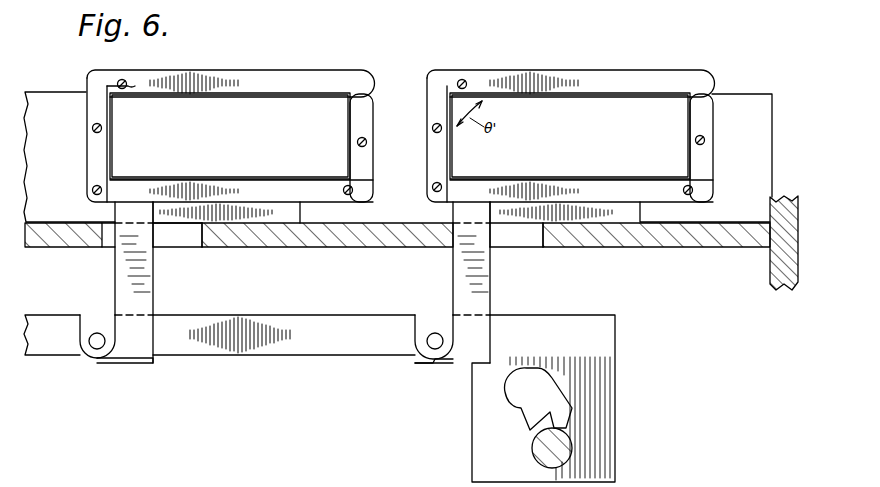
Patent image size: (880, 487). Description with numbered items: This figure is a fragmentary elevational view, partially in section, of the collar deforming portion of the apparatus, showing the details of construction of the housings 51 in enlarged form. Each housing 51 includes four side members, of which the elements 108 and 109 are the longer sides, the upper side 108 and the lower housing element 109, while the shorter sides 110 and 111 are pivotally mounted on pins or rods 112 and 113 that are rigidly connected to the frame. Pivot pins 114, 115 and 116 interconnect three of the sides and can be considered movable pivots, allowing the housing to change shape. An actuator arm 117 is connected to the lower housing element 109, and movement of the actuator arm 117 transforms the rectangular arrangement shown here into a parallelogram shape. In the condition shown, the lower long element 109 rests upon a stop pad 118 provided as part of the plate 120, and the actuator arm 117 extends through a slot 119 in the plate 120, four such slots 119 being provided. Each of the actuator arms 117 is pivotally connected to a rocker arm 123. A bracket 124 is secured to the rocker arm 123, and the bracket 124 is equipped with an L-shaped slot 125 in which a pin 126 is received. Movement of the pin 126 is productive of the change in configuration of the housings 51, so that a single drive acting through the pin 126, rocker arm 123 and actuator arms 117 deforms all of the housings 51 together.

The housing 51 is at (320, 75).
The side member 108 is at (250, 82).
The lower housing element 109 is at (248, 186).
The shorter side 110 is at (368, 110).
The shorter side 111 is at (103, 158).
The pin 112 is at (92, 129).
The pin 113 is at (368, 139).
The pivot pin 114 is at (355, 195).
The pivot pin 115 is at (90, 195).
The pivot pin 116 is at (127, 80).
The actuator arm 117 is at (148, 310).
The stop pad 118 is at (268, 220).
The slot 119 is at (195, 235).
The plate 120 is at (372, 240).
The rocker arm 123 is at (302, 335).
The bracket 124 is at (595, 410).
The L-shaped slot 125 is at (560, 405).
The pin 126 is at (570, 445).